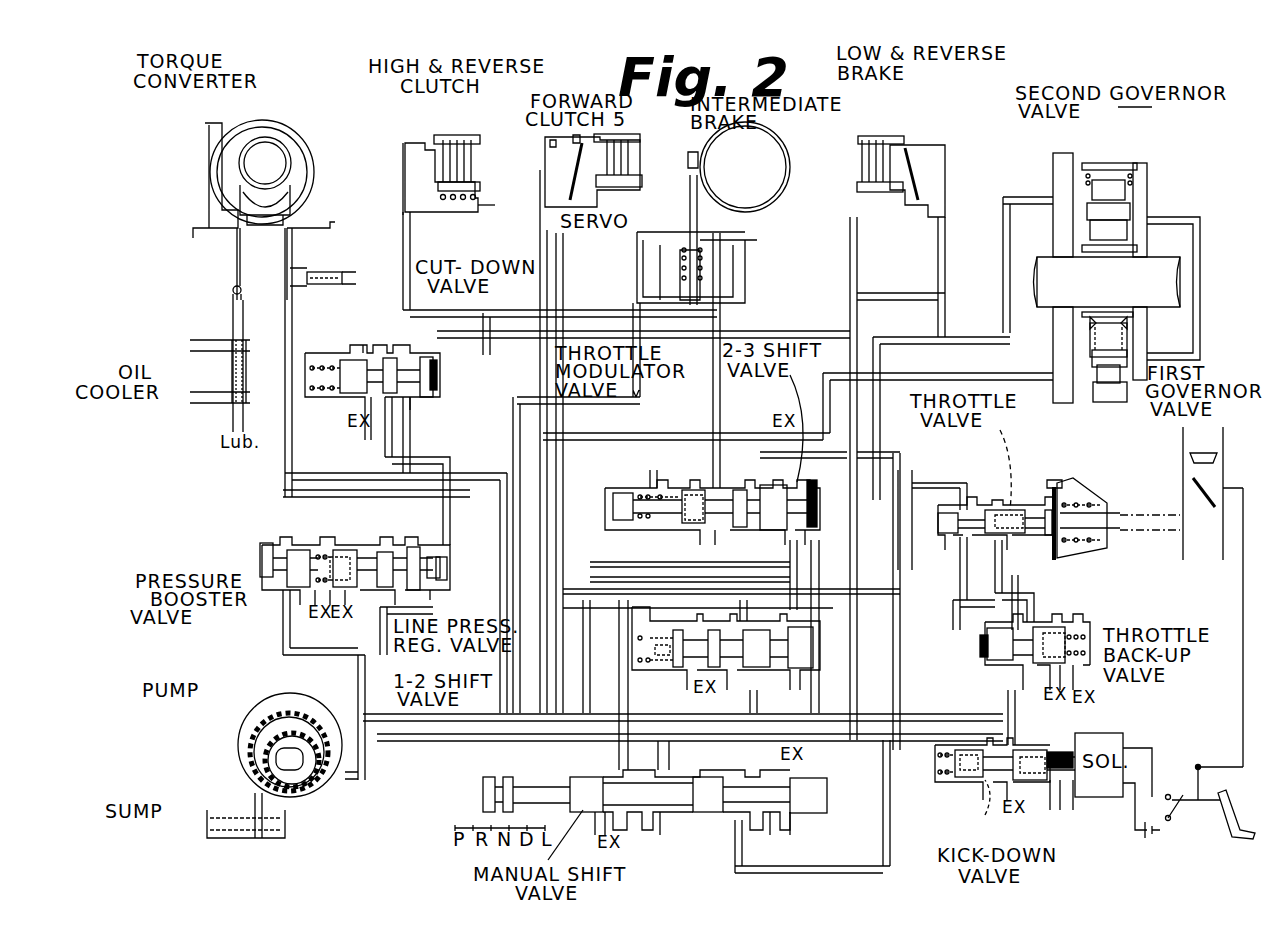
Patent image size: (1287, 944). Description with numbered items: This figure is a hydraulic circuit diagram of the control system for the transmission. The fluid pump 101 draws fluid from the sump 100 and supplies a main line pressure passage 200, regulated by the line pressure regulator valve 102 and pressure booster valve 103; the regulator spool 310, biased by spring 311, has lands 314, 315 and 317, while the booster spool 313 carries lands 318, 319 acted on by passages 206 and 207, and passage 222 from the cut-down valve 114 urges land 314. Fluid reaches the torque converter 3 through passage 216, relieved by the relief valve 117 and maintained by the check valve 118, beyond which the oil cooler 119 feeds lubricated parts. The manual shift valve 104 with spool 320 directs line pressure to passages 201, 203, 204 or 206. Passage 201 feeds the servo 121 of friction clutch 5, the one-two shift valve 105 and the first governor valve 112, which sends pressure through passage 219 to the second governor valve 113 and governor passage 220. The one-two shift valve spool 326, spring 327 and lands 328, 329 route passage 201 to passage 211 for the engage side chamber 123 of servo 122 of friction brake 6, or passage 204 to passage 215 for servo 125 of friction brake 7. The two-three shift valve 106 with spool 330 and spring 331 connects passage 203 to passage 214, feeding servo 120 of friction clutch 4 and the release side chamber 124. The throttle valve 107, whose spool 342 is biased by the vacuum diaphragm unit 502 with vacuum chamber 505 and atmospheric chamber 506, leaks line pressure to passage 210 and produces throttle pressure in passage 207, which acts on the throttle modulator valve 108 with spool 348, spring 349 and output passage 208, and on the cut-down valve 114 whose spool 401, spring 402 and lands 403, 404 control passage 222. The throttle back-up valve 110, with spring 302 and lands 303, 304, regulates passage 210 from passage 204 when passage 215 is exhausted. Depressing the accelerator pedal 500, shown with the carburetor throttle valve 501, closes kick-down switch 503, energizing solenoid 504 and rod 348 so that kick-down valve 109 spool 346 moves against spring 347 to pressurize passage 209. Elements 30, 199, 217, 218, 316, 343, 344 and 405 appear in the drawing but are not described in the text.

The torque converter 3 is at (300, 140).
The friction clutch 4 is at (450, 132).
The friction clutch 5 is at (593, 170).
The friction brake 6 is at (781, 132).
The friction brake 7 is at (892, 135).
The passage 30 is at (1011, 596).
The fluid sump 100 is at (203, 817).
The fluid pump 101 is at (249, 703).
The line pressure regulator valve 102 is at (448, 568).
The pressure booster valve 103 is at (275, 572).
The manual shift valve 104 is at (814, 780).
The 1-2 shift valve 105 is at (630, 639).
The 2-3 shift valve 106 is at (868, 485).
The throttle valve 107 is at (938, 508).
The throttle modulator valve 108 is at (610, 498).
The kick-down valve 109 is at (966, 791).
The throttle back-up valve 110 is at (972, 649).
The first governor valve 112 is at (1148, 408).
The second governor valve 113 is at (1152, 108).
The line pressure cut down valve 114 is at (443, 382).
The torque converter relief valve 117 is at (318, 270).
The torque converter check valve 118 is at (232, 292).
The oil cooler 119 is at (230, 373).
The hydraulic servo 120 is at (400, 173).
The hydraulic servo 121 is at (541, 175).
The hydraulic servo 122 is at (684, 226).
The engage side brake chamber 123 is at (671, 501).
The release side brake chamber 124 is at (712, 239).
The hydraulic servo 125 is at (954, 170).
The pump intake pipe 199 is at (252, 800).
The main line pressure passage 200 is at (422, 606).
The passage 201 is at (545, 222).
The passage 203 is at (660, 515).
The passage 204 is at (735, 695).
The passage 206 is at (283, 623).
The passage 207 is at (408, 407).
The passage 208 is at (665, 528).
The passage 209 is at (652, 465).
The passage 210 is at (1035, 615).
The passage 211 is at (650, 268).
The passage 214 is at (400, 217).
The passage 215 is at (947, 188).
The passage 216 is at (387, 512).
The converter passage 217 is at (235, 270).
The lubrication passage 218 is at (240, 420).
The passage 219 is at (1200, 297).
The passage 220 is at (1033, 200).
The passage 222 is at (381, 445).
The spring 302 is at (1088, 628).
The land 303 is at (1052, 628).
The land 304 is at (990, 660).
The spool 310 is at (398, 545).
The biasing spring 311 is at (310, 520).
The spool 313 is at (282, 545).
The land 314 is at (447, 580).
The land 315 is at (413, 545).
The spring 316 is at (375, 548).
The land 317 is at (340, 545).
The land 318 is at (298, 545).
The land 319 is at (265, 545).
The valve spool 320 is at (662, 812).
The valve spool 326 is at (820, 675).
The spring 327 is at (648, 660).
The land 328 is at (760, 645).
The land 329 is at (813, 652).
The valve spool 330 is at (752, 478).
The spring 331 is at (805, 488).
The throttle valve spool 342 is at (970, 505).
The valve land 343 is at (1058, 480).
The cam follower 344 is at (1098, 548).
The valve spool 346 is at (1001, 808).
The spring 347 is at (940, 782).
The rod 348 is at (620, 490).
The biasing spring 349 is at (660, 496).
The valve spool 401 is at (365, 348).
The biasing spring 402 is at (311, 365).
The land 403 is at (418, 368).
The land 404 is at (392, 355).
The valve land 405 is at (348, 355).
The accelerator pedal 500 is at (1243, 828).
The carburetor throttle valve 501 is at (1222, 484).
The vacuum diaphragm unit 502 is at (1090, 494).
The kick-down switch 503 is at (1186, 811).
The kick-down solenoid 504 is at (1106, 727).
The vacuum chamber 505 is at (1075, 480).
The chamber 506 is at (1048, 490).